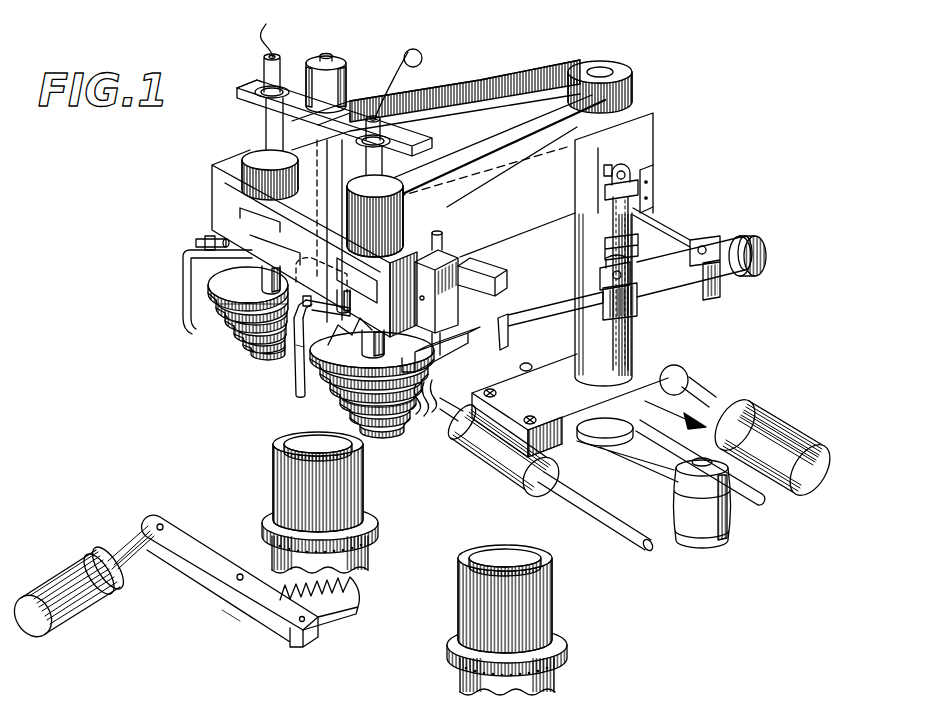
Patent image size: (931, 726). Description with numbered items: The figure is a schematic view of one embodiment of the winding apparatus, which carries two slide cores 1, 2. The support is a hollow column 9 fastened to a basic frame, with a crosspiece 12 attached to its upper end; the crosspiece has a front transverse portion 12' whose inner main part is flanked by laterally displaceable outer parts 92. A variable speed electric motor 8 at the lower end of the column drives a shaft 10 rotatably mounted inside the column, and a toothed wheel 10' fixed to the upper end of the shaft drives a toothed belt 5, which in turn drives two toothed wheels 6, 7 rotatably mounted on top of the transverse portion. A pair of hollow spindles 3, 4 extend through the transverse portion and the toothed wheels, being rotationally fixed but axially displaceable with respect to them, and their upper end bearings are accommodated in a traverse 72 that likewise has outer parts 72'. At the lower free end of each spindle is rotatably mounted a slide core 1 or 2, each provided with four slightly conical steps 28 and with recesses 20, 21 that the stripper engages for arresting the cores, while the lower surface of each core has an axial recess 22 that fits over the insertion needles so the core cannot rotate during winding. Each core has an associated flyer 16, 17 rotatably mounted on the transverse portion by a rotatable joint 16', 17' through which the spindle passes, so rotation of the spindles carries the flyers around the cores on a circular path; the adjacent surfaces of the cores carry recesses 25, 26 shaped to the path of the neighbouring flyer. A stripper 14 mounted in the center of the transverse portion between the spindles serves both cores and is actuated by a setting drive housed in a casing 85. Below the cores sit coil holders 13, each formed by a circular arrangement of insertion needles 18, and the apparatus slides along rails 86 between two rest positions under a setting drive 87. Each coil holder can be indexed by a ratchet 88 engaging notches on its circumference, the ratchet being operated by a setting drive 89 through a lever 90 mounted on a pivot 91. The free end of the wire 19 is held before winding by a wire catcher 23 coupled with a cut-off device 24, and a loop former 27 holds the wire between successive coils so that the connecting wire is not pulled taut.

The slide core 1 is at (376, 430).
The slide core 2 is at (232, 330).
The hollow spindle 3 is at (386, 170).
The hollow spindle 4 is at (264, 112).
The toothed belt 5 is at (478, 182).
The toothed wheel 6 is at (414, 200).
The toothed wheel 7 is at (248, 146).
The variable speed electric motor 8 is at (674, 518).
The hollow column 9 is at (632, 358).
The shaft 10 is at (606, 71).
The toothed wheel 10' is at (584, 53).
The crosspiece 12 is at (556, 188).
The front transverse portion 12' is at (236, 236).
The coil holder 13 is at (452, 652).
The stripper 14 is at (312, 268).
The flyer 16 is at (303, 356).
The rotatable joint 16' is at (384, 356).
The flyer 17 is at (200, 285).
The rotatable joint 17' is at (250, 282).
The insertion needles 18 is at (458, 590).
The wire 19 is at (428, 40).
The recess 20 is at (344, 336).
The recess 21 is at (300, 304).
The axial recess 22 is at (290, 365).
The wire catcher 23 is at (508, 328).
The cut-off device 24 is at (632, 310).
The recess 25 is at (342, 400).
The recess 26 is at (258, 352).
The loop former 27 is at (472, 366).
The conical steps 28 is at (426, 414).
The traverse 72 is at (334, 96).
The outer part 72' is at (237, 71).
The casing 85 is at (346, 76).
The rails 86 is at (770, 506).
The setting drive 87 is at (764, 444).
The ratchet 88 is at (346, 612).
The setting drive 89 is at (66, 576).
The lever 90 is at (184, 560).
The pivot 91 is at (232, 613).
The outer part 92 is at (212, 190).